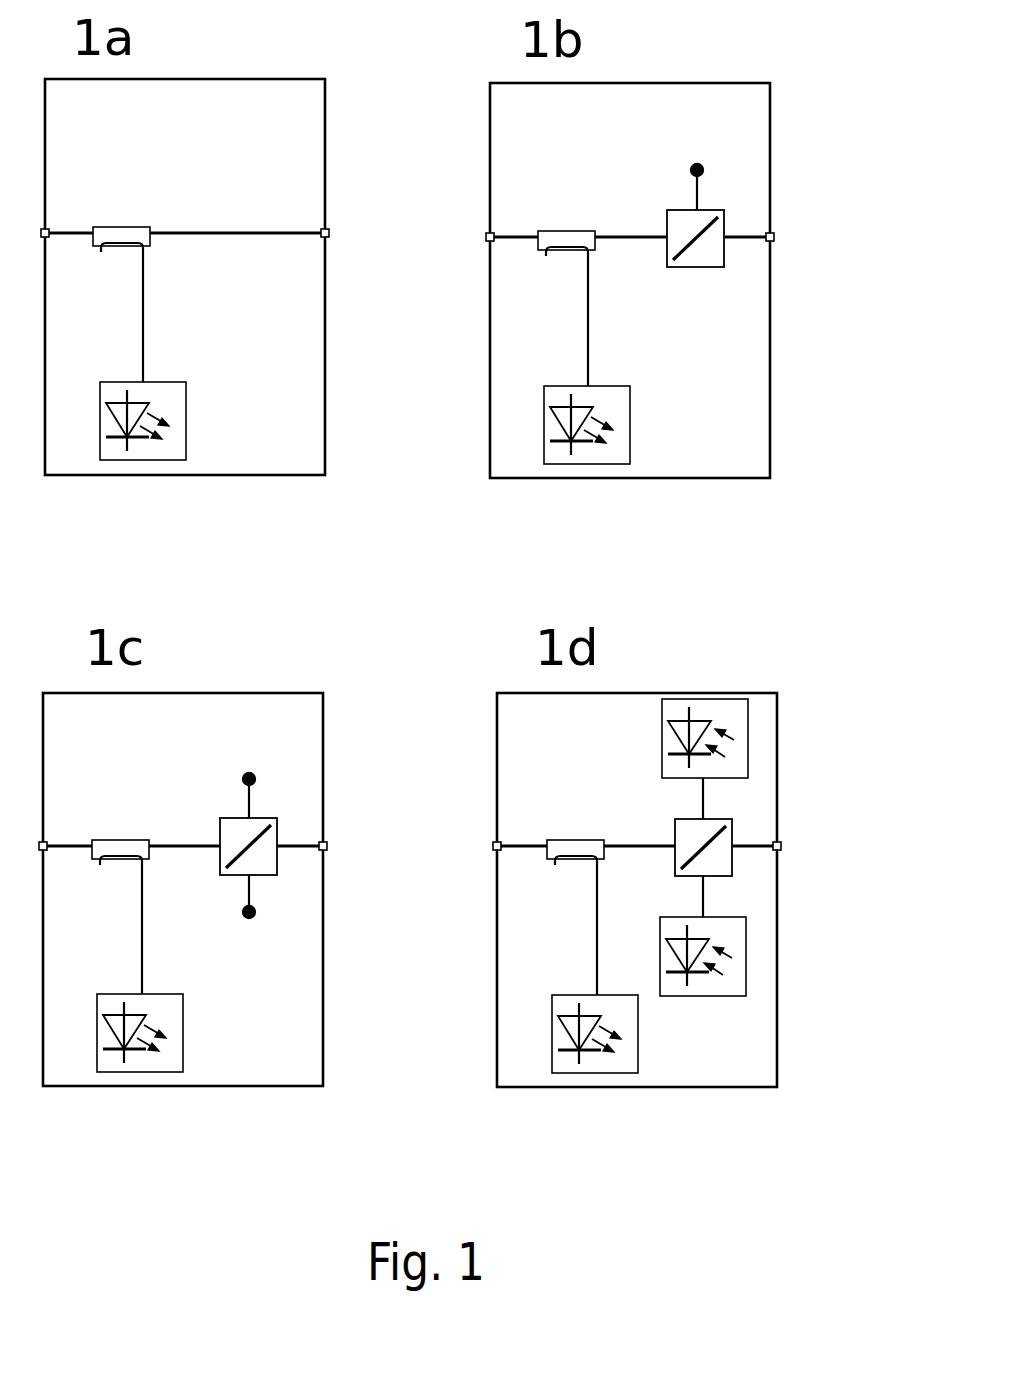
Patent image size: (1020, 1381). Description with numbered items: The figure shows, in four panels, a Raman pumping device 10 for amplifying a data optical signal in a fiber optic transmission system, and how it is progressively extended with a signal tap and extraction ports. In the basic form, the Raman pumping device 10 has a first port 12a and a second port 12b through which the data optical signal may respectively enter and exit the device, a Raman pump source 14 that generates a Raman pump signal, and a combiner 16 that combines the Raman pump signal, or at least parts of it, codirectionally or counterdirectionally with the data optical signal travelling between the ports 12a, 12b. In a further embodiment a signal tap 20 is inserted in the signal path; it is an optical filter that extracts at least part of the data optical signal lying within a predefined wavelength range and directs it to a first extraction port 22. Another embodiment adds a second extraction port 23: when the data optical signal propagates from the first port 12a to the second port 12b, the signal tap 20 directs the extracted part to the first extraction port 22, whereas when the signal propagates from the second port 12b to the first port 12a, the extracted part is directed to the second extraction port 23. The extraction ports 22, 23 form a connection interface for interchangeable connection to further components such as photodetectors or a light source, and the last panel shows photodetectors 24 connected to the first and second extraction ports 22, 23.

The Raman pumping device 10 is at (203, 504).
The first port 12a is at (47, 228).
The second port 12b is at (326, 228).
The Raman pump source 14 is at (182, 381).
The combiner 16 is at (131, 227).
The signal tap 20 is at (725, 255).
The first extraction port 22 is at (690, 170).
The second extraction port 23 is at (256, 912).
The photodetector 24 is at (748, 742).